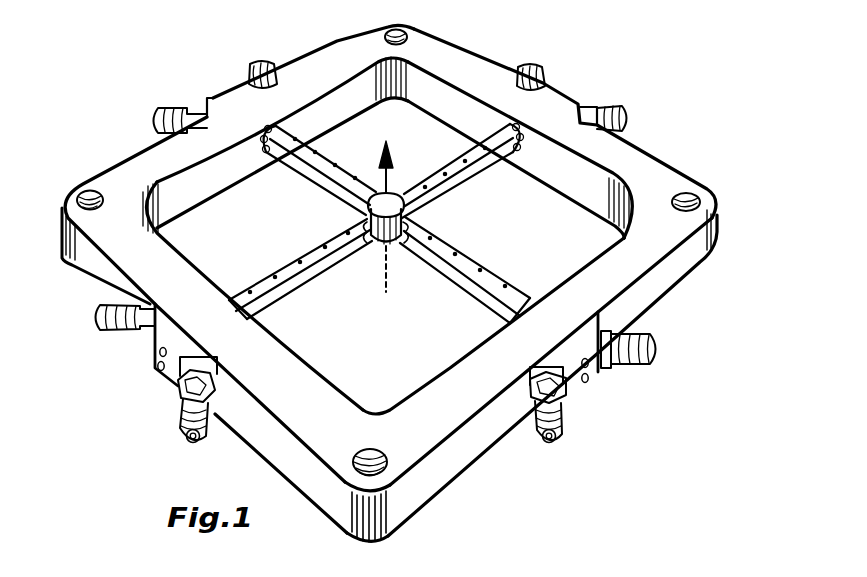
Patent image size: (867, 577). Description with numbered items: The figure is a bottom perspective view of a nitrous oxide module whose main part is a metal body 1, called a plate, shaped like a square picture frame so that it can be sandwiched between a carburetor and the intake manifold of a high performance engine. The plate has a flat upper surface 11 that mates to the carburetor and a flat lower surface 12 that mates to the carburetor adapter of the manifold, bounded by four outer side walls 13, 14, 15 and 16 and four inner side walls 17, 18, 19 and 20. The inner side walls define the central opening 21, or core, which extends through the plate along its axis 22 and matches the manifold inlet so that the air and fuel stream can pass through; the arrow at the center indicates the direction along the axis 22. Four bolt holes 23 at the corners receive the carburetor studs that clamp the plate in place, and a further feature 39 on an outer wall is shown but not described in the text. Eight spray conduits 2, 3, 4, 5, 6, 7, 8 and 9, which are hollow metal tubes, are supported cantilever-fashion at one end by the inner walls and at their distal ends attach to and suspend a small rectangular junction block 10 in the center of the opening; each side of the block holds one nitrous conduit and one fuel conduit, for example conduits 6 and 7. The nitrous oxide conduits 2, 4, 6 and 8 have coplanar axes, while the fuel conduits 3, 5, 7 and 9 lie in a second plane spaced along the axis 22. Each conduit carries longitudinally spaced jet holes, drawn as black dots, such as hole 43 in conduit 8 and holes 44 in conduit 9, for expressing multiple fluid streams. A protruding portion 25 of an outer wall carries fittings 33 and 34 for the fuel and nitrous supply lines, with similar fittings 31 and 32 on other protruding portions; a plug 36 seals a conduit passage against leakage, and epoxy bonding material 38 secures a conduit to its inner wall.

The metal body 1 is at (124, 162).
The spray conduit 2 is at (458, 182).
The spray conduit 3 is at (450, 161).
The spray conduit 4 is at (303, 172).
The spray conduit 5 is at (352, 164).
The spray conduit 6 is at (278, 301).
The spray conduit 7 is at (270, 276).
The spray conduit 8 is at (480, 301).
The spray conduit 9 is at (520, 288).
The junction block 10 is at (382, 246).
The upper surface 11 is at (470, 462).
The lower surface 12 is at (473, 365).
The outer side wall 13 is at (82, 264).
The outer side wall 14 is at (318, 60).
The outer side wall 15 is at (650, 153).
The outer side wall 16 is at (413, 503).
The inner side wall 17 is at (183, 259).
The inner side wall 18 is at (366, 102).
The inner side wall 19 is at (600, 197).
The inner side wall 20 is at (400, 406).
The central opening 21 is at (310, 234).
The axis 22 is at (386, 292).
The threaded mounting holes 23 is at (87, 194).
The protruding portion 25 is at (158, 352).
The fitting 31 is at (188, 111).
The fitting 32 is at (610, 372).
The fitting 33 is at (97, 310).
The fitting 34 is at (186, 412).
The plug 36 is at (176, 393).
The epoxy bonding material 38 is at (511, 158).
The side hole 39 is at (157, 370).
The hole 43 is at (438, 258).
The holes 44 is at (470, 259).